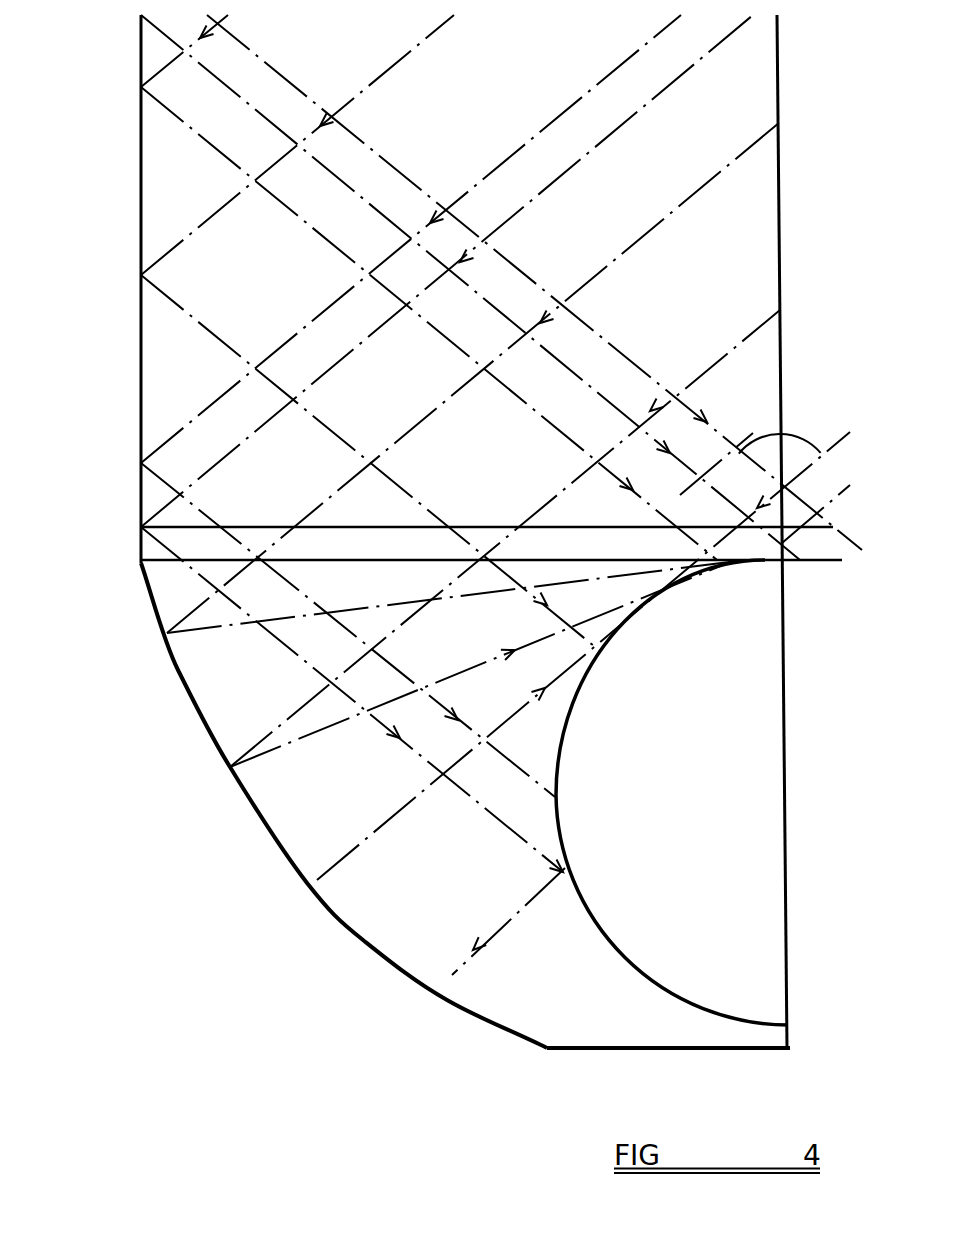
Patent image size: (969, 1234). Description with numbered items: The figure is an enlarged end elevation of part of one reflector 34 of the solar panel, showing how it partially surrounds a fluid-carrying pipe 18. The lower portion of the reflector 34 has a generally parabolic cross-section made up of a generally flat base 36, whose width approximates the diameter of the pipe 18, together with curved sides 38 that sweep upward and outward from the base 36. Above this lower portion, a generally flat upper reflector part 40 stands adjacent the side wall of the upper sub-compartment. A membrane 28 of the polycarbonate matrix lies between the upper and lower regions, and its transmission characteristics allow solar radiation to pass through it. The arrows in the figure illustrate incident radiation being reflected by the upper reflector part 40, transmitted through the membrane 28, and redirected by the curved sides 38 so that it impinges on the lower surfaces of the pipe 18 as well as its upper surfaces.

The pipe 18 is at (740, 832).
The membrane 28 is at (194, 545).
The reflector 34 is at (240, 830).
The base 36 is at (615, 1049).
The curved sides 38 is at (297, 867).
The upper reflector parts 40 is at (142, 338).